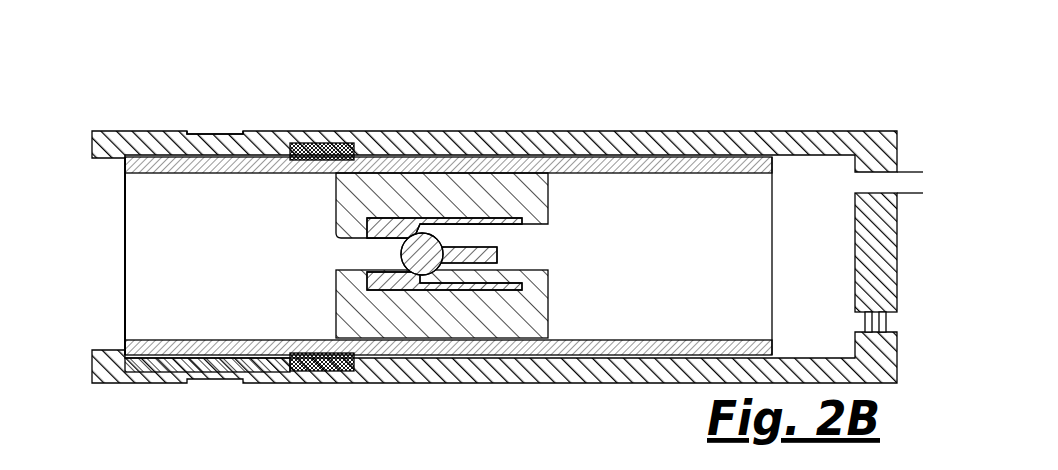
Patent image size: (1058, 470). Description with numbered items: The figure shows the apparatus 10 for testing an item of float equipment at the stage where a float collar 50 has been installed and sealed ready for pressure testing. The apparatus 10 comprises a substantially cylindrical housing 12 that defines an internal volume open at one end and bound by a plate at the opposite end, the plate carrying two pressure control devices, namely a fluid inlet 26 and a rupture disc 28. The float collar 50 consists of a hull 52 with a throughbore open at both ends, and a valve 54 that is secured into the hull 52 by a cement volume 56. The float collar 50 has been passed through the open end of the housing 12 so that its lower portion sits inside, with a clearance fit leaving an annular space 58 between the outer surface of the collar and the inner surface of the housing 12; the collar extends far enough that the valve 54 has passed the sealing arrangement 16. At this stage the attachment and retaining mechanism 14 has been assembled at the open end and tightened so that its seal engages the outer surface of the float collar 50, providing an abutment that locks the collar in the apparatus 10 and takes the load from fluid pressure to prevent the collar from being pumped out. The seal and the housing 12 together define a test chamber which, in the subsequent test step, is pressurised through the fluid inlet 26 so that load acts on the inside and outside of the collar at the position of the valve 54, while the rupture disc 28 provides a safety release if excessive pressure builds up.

The apparatus 10 is at (499, 221).
The housing 12 is at (118, 98).
The attachment and retaining mechanism 14 is at (223, 113).
The sealing arrangement 16 is at (327, 131).
The pressure control device 26 is at (899, 174).
The pressure control device 28 is at (890, 318).
The float collar 50 is at (110, 298).
The hull 52 is at (148, 343).
The valve 54 is at (412, 220).
The cement volume 56 is at (506, 182).
The annular space 58 is at (715, 131).